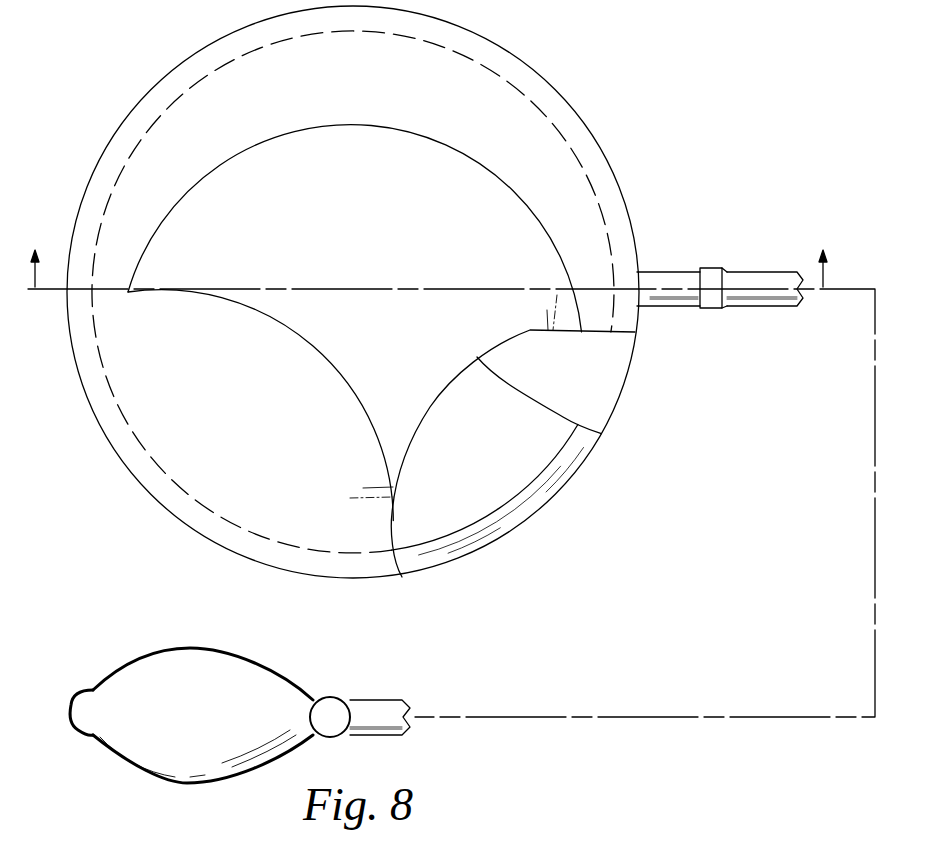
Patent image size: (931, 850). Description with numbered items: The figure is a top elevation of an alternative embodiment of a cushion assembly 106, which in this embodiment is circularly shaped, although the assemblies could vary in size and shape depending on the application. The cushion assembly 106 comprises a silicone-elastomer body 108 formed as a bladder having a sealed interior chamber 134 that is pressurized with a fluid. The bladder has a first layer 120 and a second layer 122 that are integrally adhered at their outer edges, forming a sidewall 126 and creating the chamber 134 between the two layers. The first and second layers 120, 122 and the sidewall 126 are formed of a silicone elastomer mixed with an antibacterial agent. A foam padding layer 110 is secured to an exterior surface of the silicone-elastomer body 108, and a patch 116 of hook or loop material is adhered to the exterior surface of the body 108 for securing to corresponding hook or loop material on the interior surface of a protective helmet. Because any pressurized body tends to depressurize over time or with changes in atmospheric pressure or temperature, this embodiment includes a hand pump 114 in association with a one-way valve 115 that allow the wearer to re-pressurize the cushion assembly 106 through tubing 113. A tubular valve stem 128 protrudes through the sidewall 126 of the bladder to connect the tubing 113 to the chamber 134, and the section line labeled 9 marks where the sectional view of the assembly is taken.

The section line 9- 9 is at (451, 473).
The cushion assembly 106 is at (119, 79).
The silicone-elastomer body 108 is at (192, 517).
The foam padding layer 110 is at (614, 366).
The tubing 113 is at (788, 310).
The hand pump 114 is at (176, 650).
The one-way valve 115 is at (327, 697).
The patch 116 is at (374, 255).
The first layer 120 is at (466, 494).
The second layer 122 is at (575, 180).
The sidewall 126 is at (523, 62).
The tubular valve stem 128 is at (687, 268).
The sealed interior chamber 134 is at (360, 352).